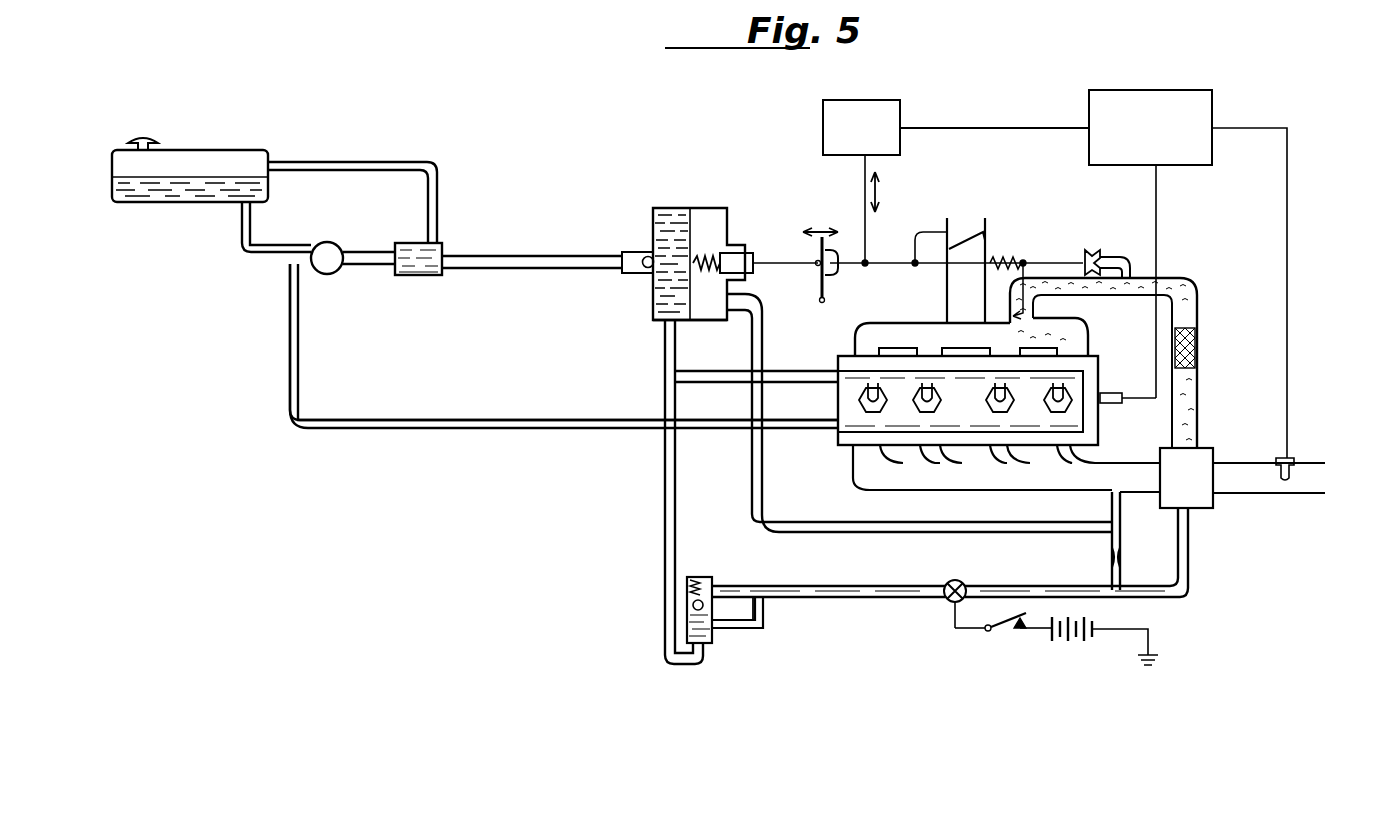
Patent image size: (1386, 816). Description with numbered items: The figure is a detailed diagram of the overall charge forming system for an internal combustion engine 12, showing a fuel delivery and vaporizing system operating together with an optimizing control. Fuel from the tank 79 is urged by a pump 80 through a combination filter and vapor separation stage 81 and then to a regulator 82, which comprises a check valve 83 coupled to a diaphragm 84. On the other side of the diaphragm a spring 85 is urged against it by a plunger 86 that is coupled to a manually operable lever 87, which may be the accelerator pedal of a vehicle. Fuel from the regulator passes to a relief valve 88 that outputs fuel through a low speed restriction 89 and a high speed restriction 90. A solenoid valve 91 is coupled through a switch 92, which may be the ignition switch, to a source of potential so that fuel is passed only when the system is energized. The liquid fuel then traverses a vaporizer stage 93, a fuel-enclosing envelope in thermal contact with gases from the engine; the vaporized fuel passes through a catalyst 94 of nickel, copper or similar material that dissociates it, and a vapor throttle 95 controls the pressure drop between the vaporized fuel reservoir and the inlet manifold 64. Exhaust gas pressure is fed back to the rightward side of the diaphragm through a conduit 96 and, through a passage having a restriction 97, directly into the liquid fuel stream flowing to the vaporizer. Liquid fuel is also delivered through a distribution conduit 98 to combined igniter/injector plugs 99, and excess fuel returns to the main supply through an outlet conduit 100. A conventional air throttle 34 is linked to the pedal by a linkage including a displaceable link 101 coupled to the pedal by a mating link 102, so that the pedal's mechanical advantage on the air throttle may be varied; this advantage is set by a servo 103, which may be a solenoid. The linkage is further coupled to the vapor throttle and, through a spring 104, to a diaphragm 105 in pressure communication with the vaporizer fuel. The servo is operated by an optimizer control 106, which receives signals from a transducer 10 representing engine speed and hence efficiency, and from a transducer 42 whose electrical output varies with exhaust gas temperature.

The transducer 10 is at (1112, 392).
The engine 12 is at (832, 452).
The air throttle 34 is at (968, 240).
The transducer 42 is at (1292, 473).
The inlet manifold 64 is at (1086, 343).
The tank 79 is at (192, 212).
The pump 80 is at (337, 243).
The combination filter and vapor separation stage 81 is at (447, 243).
The regulator 82 is at (715, 207).
The check valve 83 is at (645, 257).
The diaphragm 84 is at (693, 232).
The spring 85 is at (707, 273).
The plunger 86 is at (757, 270).
The manually operable lever 87 is at (830, 286).
The relief valve 88 is at (713, 642).
The low speed restriction 89 is at (765, 627).
The high speed restriction 90 is at (735, 586).
The solenoid valve 91 is at (948, 603).
The switch 92 is at (1005, 630).
The vaporizer stage 93 is at (1218, 500).
The catalyst 94 is at (1200, 342).
The vapor throttle 95 is at (1022, 312).
The conduit 96 is at (752, 497).
The restriction 97 is at (1122, 557).
The distribution conduit 98 is at (792, 371).
The combined igniter/injector plugs 99 is at (965, 400).
The outlet conduit 100 is at (300, 362).
The displaceable link 101 is at (890, 266).
The mating link 102 is at (835, 252).
The servo 103 is at (905, 101).
The spring 104 is at (1012, 257).
The diaphragm 105 is at (1095, 250).
The optimizer control 106 is at (1163, 92).